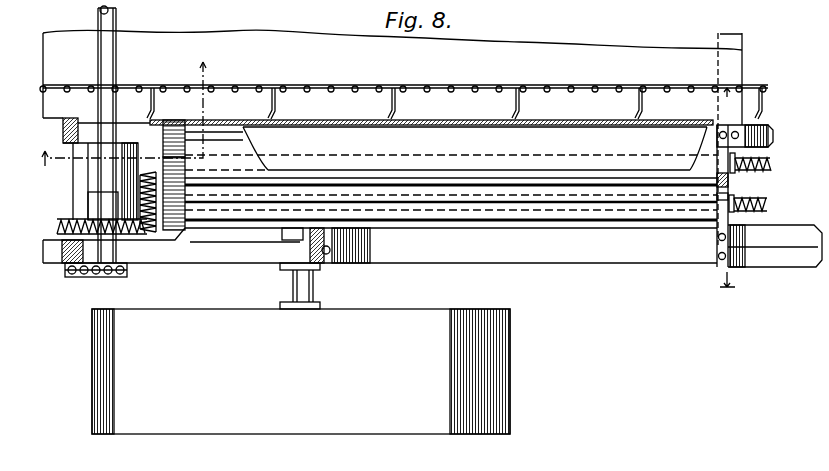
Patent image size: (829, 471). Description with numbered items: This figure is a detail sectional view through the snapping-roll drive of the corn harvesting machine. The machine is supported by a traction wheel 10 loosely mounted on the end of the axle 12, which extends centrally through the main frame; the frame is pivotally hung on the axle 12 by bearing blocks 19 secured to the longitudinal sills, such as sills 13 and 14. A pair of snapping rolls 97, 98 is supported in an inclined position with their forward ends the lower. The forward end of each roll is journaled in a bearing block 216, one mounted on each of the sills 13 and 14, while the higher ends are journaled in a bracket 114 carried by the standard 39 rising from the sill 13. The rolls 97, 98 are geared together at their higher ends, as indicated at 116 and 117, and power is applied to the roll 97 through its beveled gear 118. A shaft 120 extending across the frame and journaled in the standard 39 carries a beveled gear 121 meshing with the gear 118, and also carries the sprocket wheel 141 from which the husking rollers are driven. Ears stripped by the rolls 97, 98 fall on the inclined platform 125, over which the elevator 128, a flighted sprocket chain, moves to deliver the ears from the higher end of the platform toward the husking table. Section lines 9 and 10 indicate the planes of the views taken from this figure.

The section line 9- 9 is at (126, 114).
The traction wheel 10 is at (53, 133).
The axle 12 is at (320, 288).
The longitudinal sill 13 is at (812, 227).
The longitudinal sill 14 is at (774, 128).
The bearing block 19 is at (345, 238).
The standard 39 is at (66, 264).
The snapping roll 97 is at (479, 218).
The snapping roll 98 is at (247, 160).
The bracket 114 is at (118, 150).
The gear 116 is at (186, 231).
The gear 117 is at (166, 124).
The beveled gear 118 is at (152, 229).
The shaft 120 is at (117, 13).
The beveled gear 121 is at (147, 235).
The platform 125 is at (683, 51).
The elevator 128 is at (455, 80).
The sprocket wheel 141 is at (90, 279).
The bearing block 216 is at (756, 157).